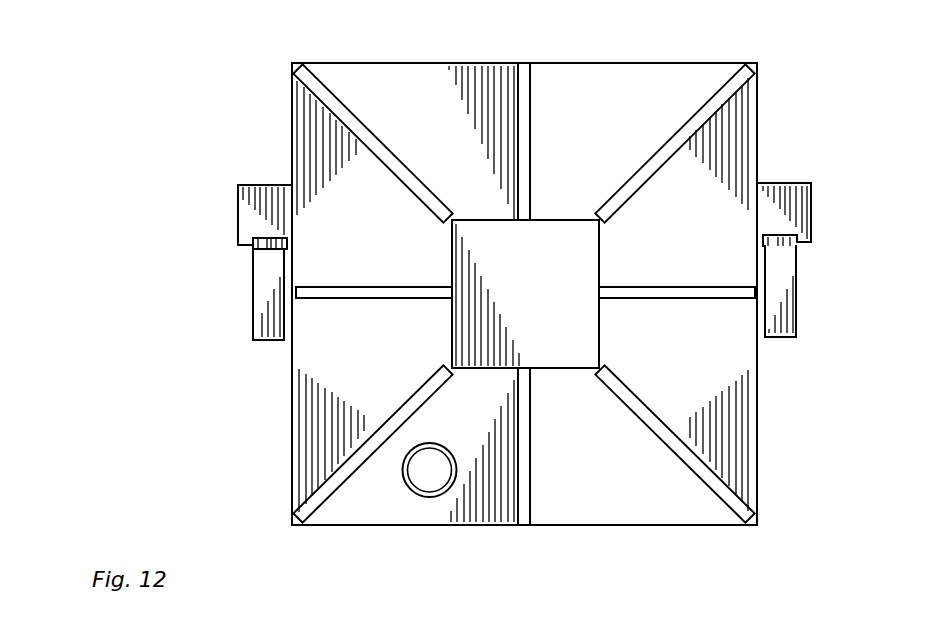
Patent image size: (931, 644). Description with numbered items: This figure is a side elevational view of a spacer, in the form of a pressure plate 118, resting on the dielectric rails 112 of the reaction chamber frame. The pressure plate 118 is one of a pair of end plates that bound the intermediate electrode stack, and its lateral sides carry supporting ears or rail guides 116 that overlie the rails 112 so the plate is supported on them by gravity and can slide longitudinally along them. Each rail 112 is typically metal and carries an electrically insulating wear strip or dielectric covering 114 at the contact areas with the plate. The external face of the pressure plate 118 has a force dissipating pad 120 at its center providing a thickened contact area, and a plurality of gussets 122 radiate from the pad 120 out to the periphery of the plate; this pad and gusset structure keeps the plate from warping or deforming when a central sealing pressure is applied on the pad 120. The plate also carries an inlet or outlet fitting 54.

The inlet or outlet fitting 54 is at (435, 497).
The dielectric rail 112 is at (265, 302).
The dielectric covering 114 is at (265, 240).
The supporting ear or rail guide 116 is at (248, 201).
The pressure plate 118 is at (322, 108).
The force dissipating pad 120 is at (544, 298).
The gusset 122 is at (380, 428).